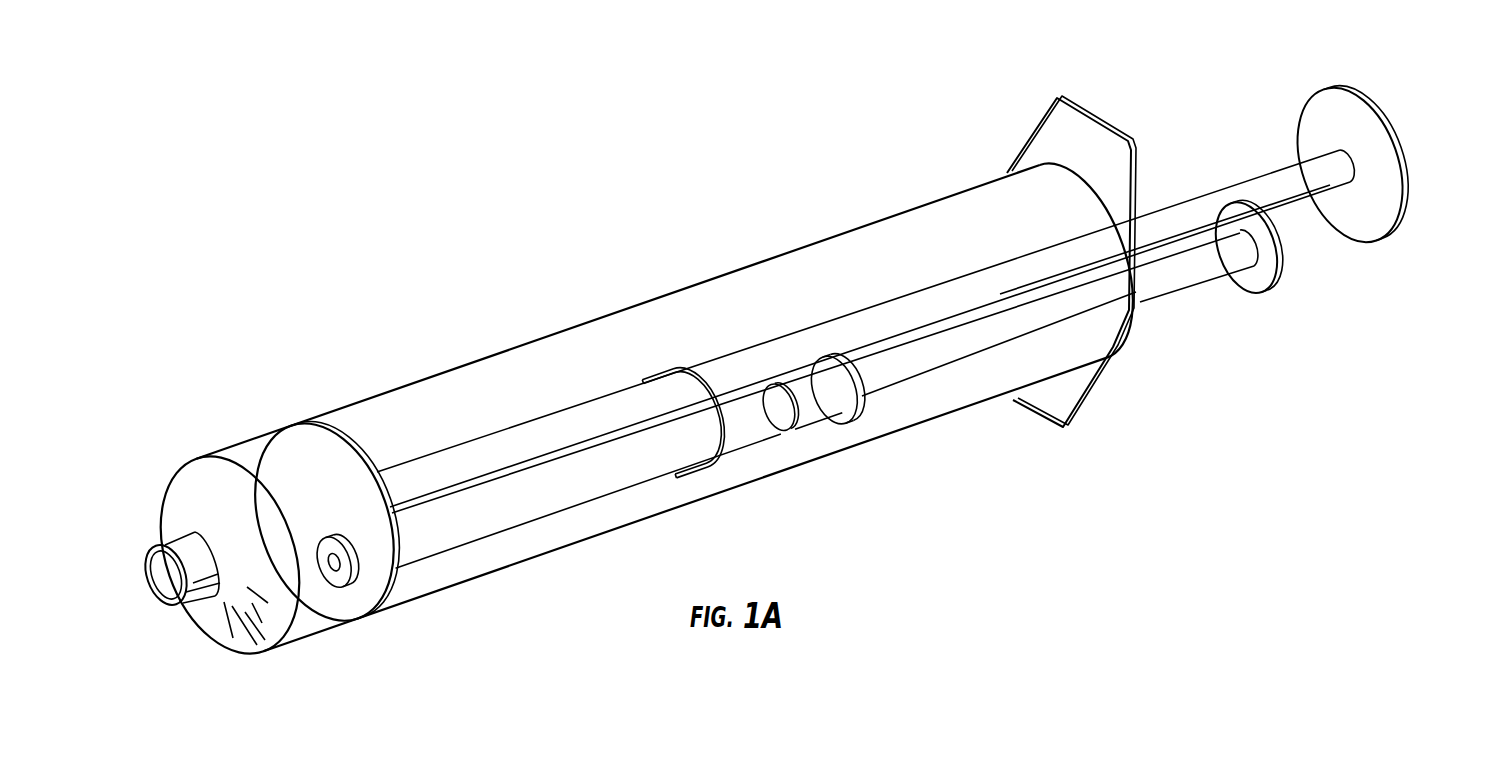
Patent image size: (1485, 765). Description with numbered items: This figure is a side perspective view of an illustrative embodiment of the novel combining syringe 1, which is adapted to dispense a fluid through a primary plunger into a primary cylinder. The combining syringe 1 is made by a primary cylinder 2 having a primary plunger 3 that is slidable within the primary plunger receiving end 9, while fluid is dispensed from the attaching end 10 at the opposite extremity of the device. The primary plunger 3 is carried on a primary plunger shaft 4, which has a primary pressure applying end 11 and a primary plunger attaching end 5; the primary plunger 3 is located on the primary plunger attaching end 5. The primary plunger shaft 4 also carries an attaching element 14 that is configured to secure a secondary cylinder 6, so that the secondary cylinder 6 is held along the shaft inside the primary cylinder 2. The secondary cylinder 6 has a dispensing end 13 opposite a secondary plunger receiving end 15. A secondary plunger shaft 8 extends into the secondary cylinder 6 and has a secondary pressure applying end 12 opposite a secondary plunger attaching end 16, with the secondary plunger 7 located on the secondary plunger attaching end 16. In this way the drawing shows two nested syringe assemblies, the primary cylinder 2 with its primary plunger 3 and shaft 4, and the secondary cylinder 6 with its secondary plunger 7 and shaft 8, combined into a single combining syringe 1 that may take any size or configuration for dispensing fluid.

The combining syringe 1 is at (250, 400).
The primary cylinder 2 is at (518, 348).
The primary plunger 3 is at (316, 588).
The primary plunger shaft 4 is at (850, 308).
The primary plunger attaching end 5 is at (403, 487).
The secondary cylinder 6 is at (545, 490).
The secondary plunger 7 is at (775, 415).
The secondary plunger shaft 8 is at (938, 354).
The primary plunger receiving end 9 is at (1140, 190).
The attaching end 10 is at (188, 507).
The primary pressure applying end 11 is at (1408, 143).
The secondary pressure applying end 12 is at (1283, 268).
The dispensing end 13 is at (331, 572).
The attaching element 14 is at (686, 372).
The secondary plunger receiving end 15 is at (868, 410).
The secondary plunger attaching end 16 is at (810, 408).